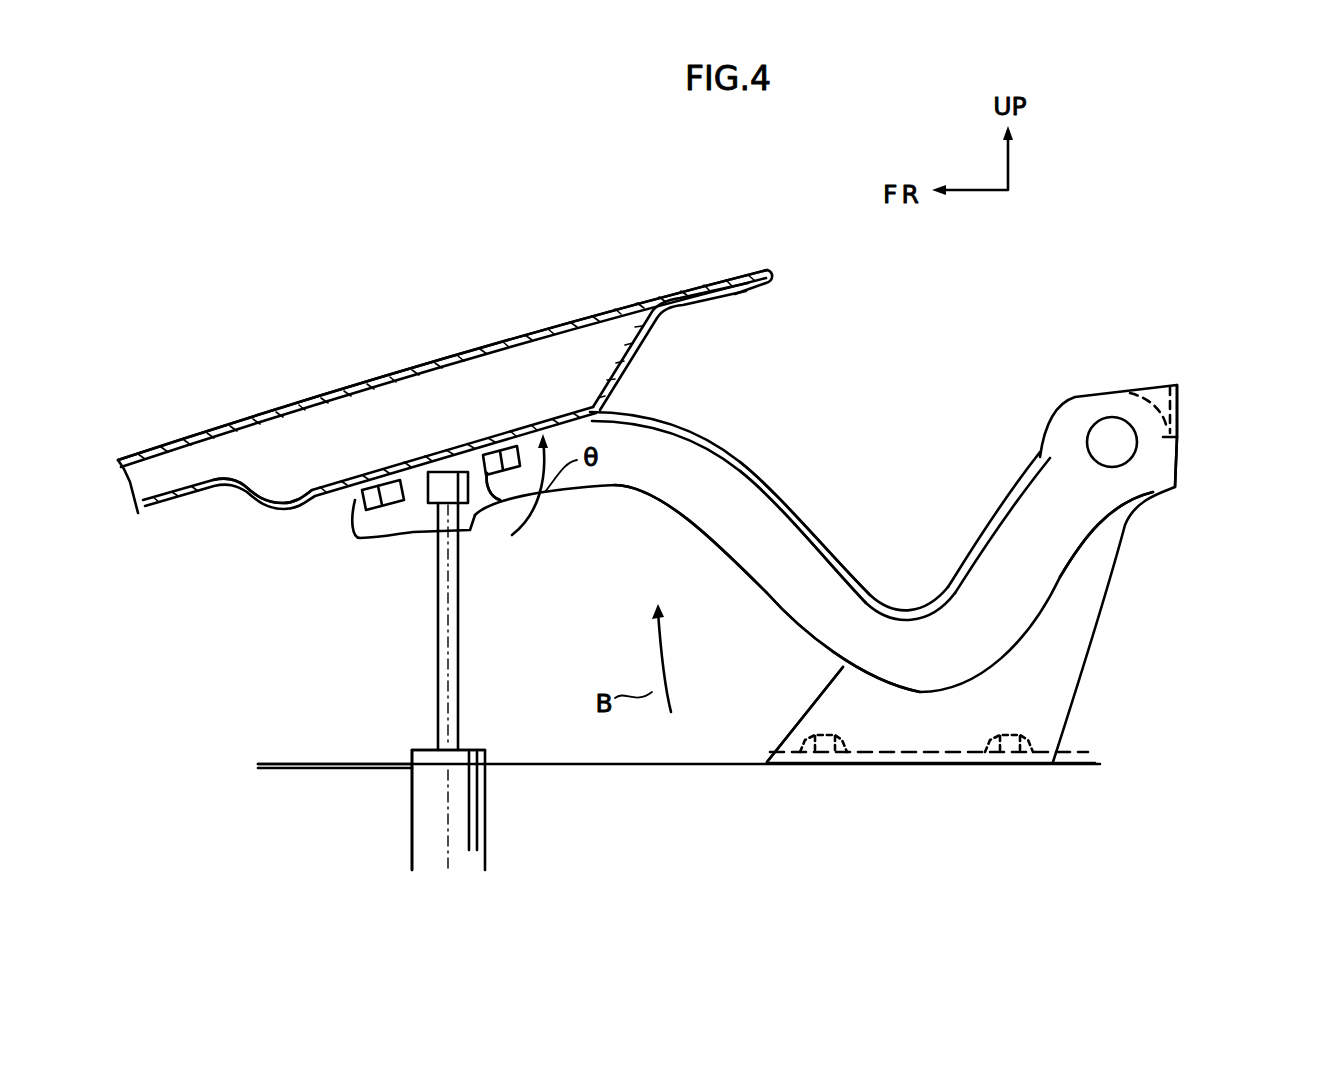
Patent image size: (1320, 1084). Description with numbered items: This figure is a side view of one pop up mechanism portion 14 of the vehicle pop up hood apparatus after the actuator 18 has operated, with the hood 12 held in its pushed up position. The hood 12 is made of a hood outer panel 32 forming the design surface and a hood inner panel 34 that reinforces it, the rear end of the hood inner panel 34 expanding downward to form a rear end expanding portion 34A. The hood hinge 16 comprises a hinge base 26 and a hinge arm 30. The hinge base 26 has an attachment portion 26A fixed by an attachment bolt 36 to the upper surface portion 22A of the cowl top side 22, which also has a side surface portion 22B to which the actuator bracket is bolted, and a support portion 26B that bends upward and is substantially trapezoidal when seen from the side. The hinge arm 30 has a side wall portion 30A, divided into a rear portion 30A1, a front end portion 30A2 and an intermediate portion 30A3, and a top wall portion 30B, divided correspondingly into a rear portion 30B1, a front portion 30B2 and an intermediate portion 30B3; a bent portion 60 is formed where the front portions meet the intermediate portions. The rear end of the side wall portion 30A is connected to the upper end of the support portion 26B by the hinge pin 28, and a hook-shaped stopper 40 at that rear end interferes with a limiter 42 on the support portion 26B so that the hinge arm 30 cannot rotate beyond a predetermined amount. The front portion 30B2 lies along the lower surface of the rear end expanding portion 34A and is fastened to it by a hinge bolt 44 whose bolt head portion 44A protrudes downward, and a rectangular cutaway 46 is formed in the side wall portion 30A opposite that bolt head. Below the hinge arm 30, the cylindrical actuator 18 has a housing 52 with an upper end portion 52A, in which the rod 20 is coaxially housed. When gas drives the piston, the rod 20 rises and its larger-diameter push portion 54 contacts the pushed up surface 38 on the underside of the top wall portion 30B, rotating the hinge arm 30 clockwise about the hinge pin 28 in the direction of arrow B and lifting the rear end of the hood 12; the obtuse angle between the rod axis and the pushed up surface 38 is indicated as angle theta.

The hood 12 is at (323, 393).
The pop up mechanism portion 14 is at (637, 761).
The hood hinge 16 is at (925, 445).
The actuator 18 is at (410, 835).
The rod 20 is at (458, 692).
The cowl top side 22 is at (325, 672).
The upper surface portion 22A is at (313, 766).
The side surface portion 22B is at (275, 770).
The hinge base 26 is at (1085, 660).
The attachment portion 26A is at (905, 766).
The support portion 26B is at (820, 698).
The hinge pin 28 is at (1110, 442).
The hinge arm 30 is at (791, 503).
The side wall portion 30A is at (1043, 565).
The rear portion 30A1 is at (1080, 527).
The front end portion 30A2 is at (452, 541).
The intermediate portion 30A3 is at (765, 583).
The top wall portion 30B is at (820, 507).
The rear portion 30B1 is at (1035, 447).
The front portion 30B2 is at (572, 420).
The intermediate portion 30B3 is at (826, 545).
The hood outer panel 32 is at (222, 435).
The hood inner panel 34 is at (218, 487).
The rear end expanding portion 34A is at (300, 505).
The attachment bolt 36 is at (1013, 762).
The pushed up surface 38 is at (418, 452).
The stopper 40 is at (1182, 420).
The limiter 42 is at (1178, 470).
The hinge bolt 44 is at (395, 525).
The bolt head portion 44A is at (509, 548).
The cutaway 46 is at (510, 497).
The housing 52 is at (468, 852).
The upper end portion 52A is at (427, 748).
The push portion 54 is at (490, 442).
The bent portion 60 is at (688, 432).